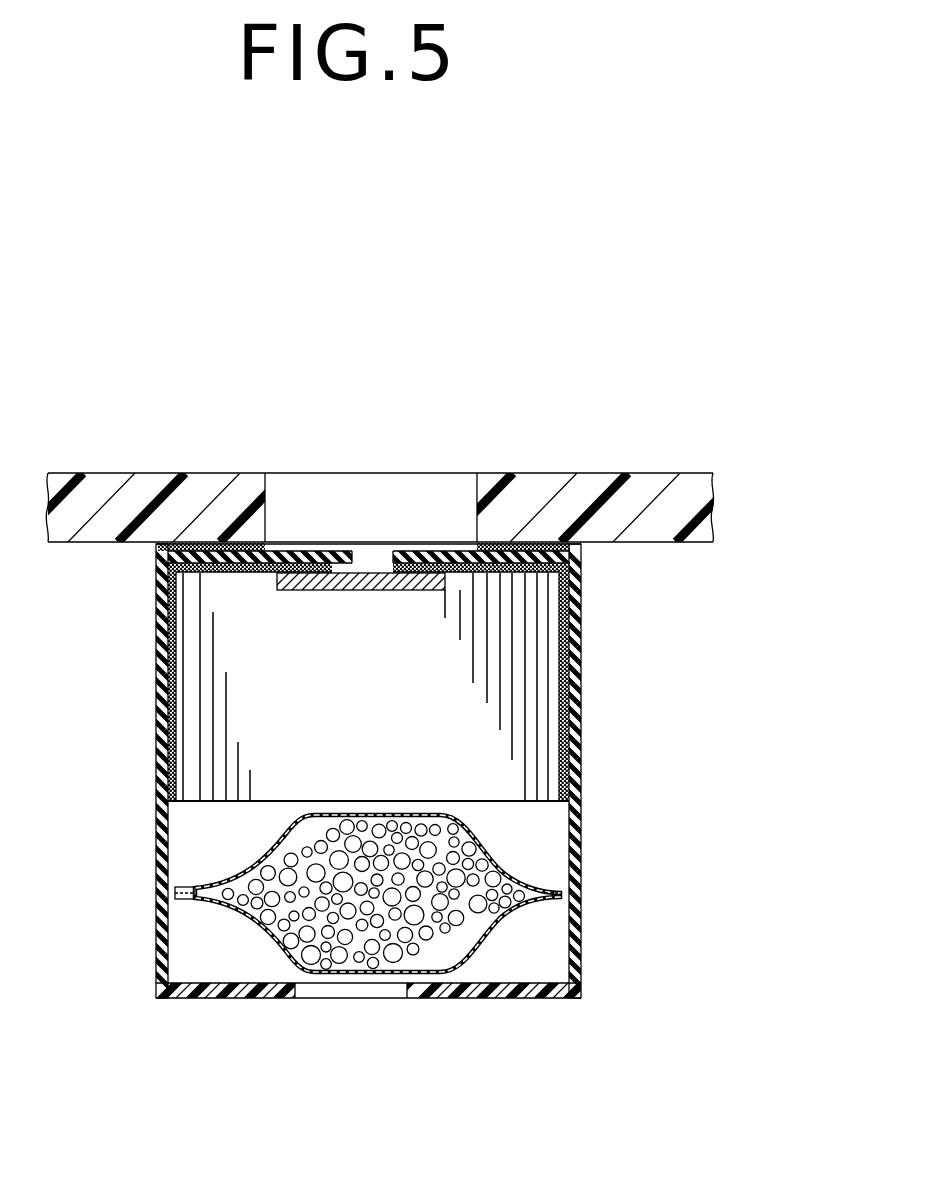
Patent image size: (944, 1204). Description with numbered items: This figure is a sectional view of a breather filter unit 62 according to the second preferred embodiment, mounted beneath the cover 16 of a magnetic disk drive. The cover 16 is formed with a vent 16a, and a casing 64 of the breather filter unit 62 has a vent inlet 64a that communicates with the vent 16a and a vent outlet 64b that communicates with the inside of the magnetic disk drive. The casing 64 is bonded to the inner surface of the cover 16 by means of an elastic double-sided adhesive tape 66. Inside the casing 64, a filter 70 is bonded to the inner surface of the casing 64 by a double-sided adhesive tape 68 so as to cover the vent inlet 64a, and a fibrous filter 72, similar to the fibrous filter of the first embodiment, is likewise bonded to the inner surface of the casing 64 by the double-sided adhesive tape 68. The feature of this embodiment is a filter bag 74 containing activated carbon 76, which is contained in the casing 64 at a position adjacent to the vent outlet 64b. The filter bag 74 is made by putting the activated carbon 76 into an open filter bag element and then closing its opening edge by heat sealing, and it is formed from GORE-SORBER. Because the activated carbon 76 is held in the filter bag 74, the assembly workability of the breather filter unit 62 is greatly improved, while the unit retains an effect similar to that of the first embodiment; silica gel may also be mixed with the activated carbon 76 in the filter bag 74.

The cover 16 is at (633, 473).
The vent 16a is at (477, 495).
The breather filter unit 62 is at (398, 760).
The casing 64 is at (583, 776).
The vent inlet 64a is at (352, 550).
The vent outlet 64b is at (350, 997).
The elastic double-sided adhesive tape 66 is at (583, 546).
The double-sided adhesive tape 68 is at (566, 660).
The filter 70 is at (360, 592).
The fibrous filter 72 is at (205, 713).
The filter bag 74 is at (500, 923).
The activated carbon 76 is at (490, 857).